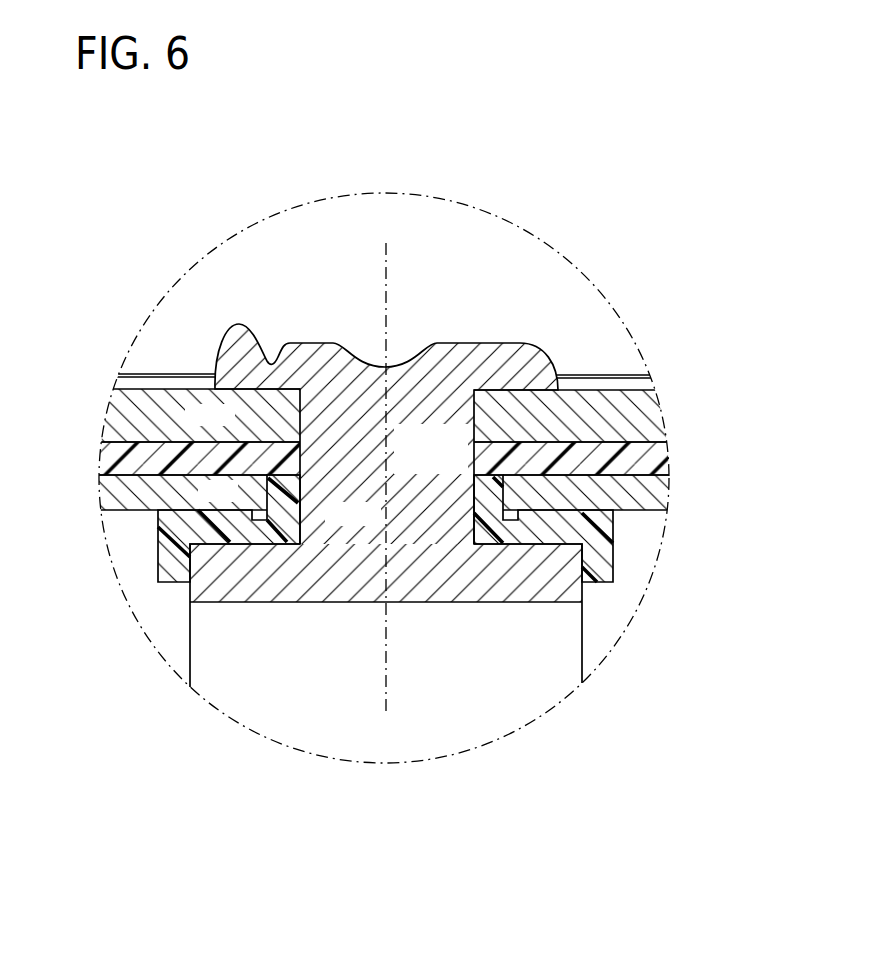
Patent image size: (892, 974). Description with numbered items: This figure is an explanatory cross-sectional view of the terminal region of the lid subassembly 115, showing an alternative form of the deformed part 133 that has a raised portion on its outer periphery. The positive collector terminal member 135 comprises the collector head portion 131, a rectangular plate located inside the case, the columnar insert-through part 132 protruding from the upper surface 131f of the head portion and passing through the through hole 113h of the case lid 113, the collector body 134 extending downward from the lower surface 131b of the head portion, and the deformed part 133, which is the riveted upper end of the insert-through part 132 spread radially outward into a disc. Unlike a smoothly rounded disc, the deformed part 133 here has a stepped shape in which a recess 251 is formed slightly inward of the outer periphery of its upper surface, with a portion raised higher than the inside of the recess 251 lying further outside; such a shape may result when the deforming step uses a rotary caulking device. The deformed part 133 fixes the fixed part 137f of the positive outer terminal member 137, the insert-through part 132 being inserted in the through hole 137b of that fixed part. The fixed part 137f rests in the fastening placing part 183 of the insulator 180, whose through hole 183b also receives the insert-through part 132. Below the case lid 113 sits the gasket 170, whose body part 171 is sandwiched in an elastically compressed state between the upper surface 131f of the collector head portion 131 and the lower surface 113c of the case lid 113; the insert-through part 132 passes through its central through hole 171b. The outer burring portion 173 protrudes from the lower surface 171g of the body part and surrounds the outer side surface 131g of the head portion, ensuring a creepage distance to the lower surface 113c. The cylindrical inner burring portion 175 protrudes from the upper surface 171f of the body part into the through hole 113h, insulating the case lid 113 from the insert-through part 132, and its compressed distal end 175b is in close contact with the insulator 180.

The lid subassembly 115 is at (483, 307).
The recess 251 is at (272, 365).
The positive collector terminal member 135 is at (243, 326).
The fixed part 137f is at (131, 410).
The fastening placing part 183 is at (133, 457).
The distal end 175b is at (280, 447).
The inner burring portion 175 is at (270, 488).
The through hole 183b is at (330, 455).
The outer burring portion 173 is at (163, 568).
The outer side surface 131g is at (190, 578).
The body part 171 is at (246, 530).
The through hole 171b is at (303, 522).
The lower surface 131b is at (385, 605).
The lower surface 113c is at (590, 518).
The collector head portion 131 is at (573, 590).
The lower surface 171g is at (600, 545).
The gasket 170 is at (603, 555).
The upper surface 131f is at (615, 523).
The case lid 113 is at (625, 490).
The upper surface 171f is at (633, 440).
The insulator 180 is at (590, 423).
The positive outer terminal member 137 is at (580, 398).
The deformed part 133 is at (503, 357).
The through hole 137b is at (468, 412).
The insert-through part 132 is at (357, 417).
The through hole 113h is at (503, 492).
The collector body 134 is at (190, 642).